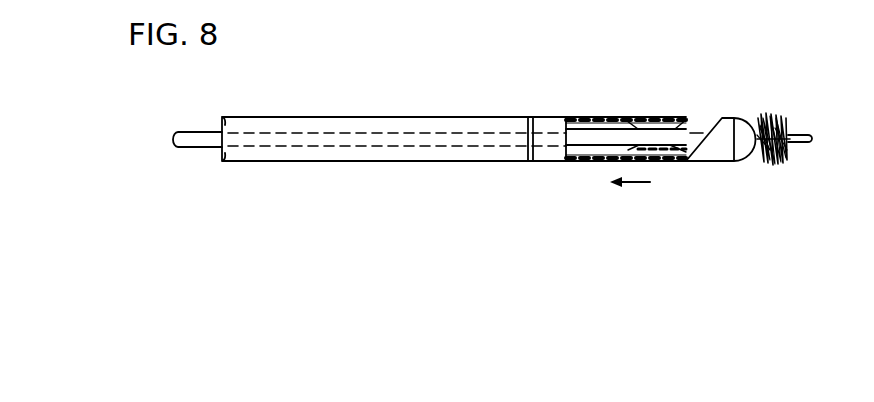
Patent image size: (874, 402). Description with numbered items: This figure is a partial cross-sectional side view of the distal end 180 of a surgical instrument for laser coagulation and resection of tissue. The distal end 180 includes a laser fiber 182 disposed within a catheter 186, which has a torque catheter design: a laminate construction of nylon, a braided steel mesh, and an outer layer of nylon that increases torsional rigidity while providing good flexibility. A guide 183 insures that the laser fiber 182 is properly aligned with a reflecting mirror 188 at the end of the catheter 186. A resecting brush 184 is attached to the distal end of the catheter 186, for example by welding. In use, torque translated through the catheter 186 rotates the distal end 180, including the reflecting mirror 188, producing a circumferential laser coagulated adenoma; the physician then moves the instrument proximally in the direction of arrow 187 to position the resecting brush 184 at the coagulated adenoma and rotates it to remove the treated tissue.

The distal end 180 is at (545, 188).
The laser fiber 182 is at (187, 148).
The guide 183 is at (648, 128).
The resecting brush 184 is at (787, 117).
The catheter 186 is at (402, 116).
The arrow 187 is at (657, 181).
The reflecting mirror 188 is at (720, 120).